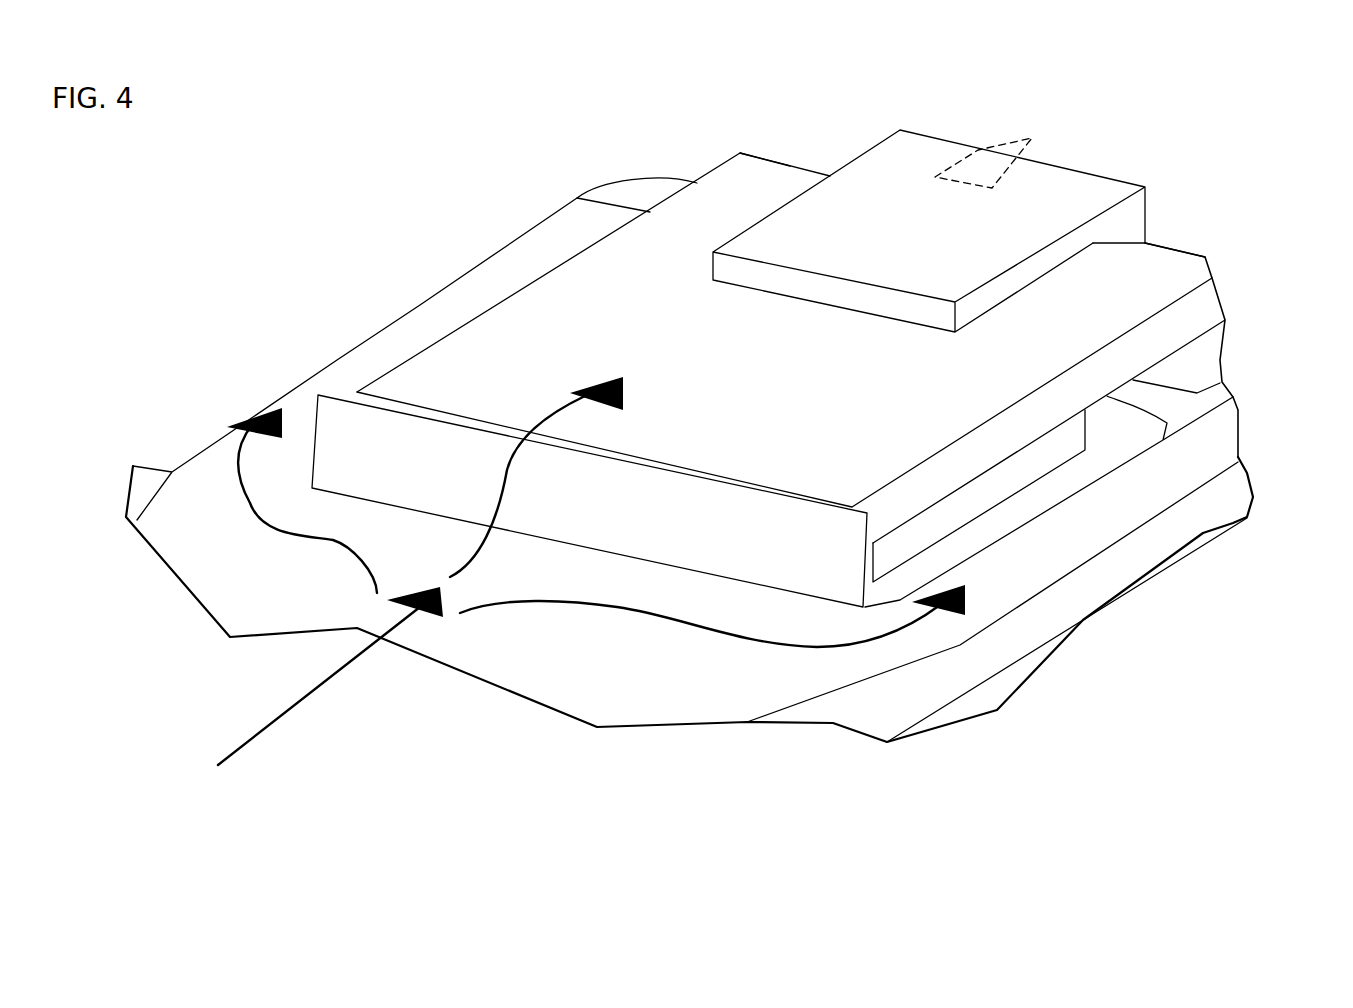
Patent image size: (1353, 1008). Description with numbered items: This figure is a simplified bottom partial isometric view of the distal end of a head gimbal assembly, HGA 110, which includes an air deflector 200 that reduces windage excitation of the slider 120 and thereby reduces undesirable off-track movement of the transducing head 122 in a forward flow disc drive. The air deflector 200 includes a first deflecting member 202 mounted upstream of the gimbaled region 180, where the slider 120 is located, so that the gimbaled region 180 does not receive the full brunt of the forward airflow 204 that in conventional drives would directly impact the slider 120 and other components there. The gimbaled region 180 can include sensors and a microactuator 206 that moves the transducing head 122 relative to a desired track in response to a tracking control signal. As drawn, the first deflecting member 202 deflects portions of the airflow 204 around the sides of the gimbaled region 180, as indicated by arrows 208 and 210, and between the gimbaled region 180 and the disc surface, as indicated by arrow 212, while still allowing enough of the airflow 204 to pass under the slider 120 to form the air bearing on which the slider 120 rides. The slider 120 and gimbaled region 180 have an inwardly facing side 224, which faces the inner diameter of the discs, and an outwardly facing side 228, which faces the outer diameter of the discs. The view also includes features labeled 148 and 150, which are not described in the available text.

The head gimbal assembly 110 is at (1262, 161).
The slider 120 is at (1100, 187).
The transducing head 122 is at (995, 146).
The base plate 148 is at (143, 482).
The rail 150 is at (573, 210).
The gimbaled region 180 is at (426, 346).
The air deflector 200 is at (300, 400).
The first deflecting member 202 is at (410, 458).
The forward airflow 204 is at (278, 722).
The microactuator 206 is at (760, 167).
The arrow 208 is at (717, 627).
The arrow 210 is at (287, 527).
The arrow 212 is at (510, 467).
The inwardly facing side 224 is at (1170, 338).
The outwardly facing side 228 is at (520, 293).